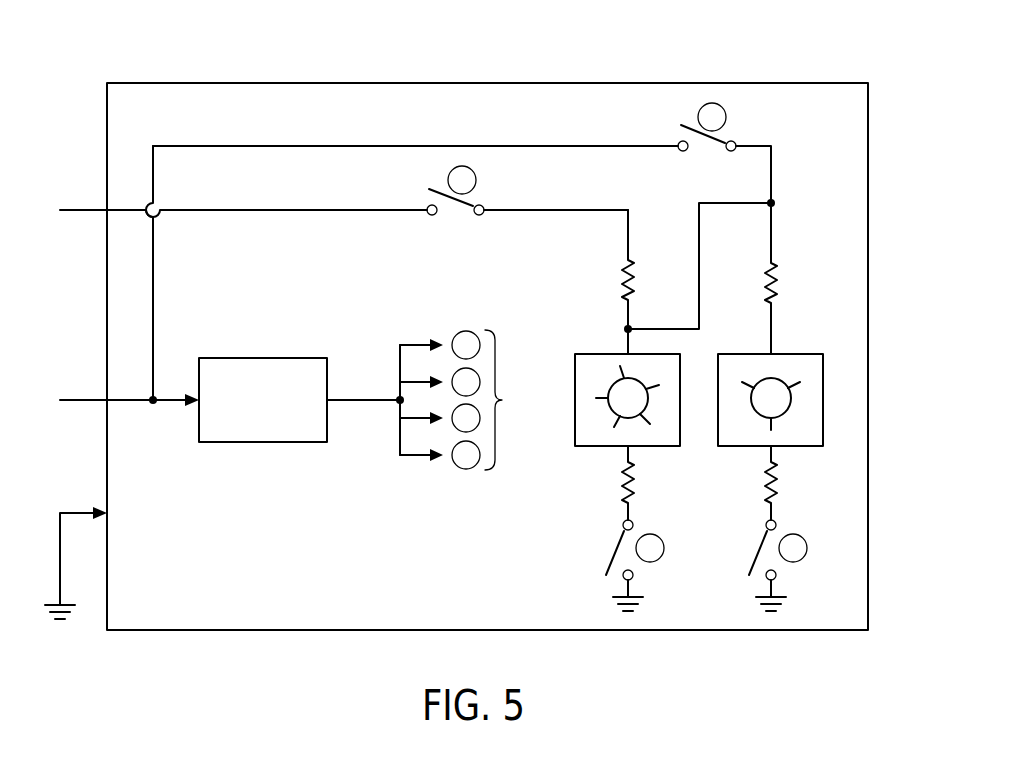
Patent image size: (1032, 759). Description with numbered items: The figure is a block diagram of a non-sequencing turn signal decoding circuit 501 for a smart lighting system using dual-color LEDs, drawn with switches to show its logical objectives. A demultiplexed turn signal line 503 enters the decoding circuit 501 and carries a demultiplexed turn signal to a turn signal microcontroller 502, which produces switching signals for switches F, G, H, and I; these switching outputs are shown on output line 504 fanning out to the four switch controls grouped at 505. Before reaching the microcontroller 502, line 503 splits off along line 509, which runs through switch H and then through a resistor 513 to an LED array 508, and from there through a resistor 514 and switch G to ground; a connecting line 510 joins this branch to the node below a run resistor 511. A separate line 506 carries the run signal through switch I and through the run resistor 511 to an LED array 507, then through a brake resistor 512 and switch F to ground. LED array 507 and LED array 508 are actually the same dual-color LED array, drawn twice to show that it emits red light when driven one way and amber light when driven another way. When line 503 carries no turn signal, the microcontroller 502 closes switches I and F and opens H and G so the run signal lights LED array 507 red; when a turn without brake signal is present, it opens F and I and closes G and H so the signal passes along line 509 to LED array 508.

The turn signal decoding circuit 501 is at (819, 59).
The turn signal microcontroller 502 is at (263, 400).
The demultiplexed turn signal line 503 is at (137, 403).
The controller output line 504 is at (360, 403).
The switch control outputs 505 is at (479, 400).
The line 506 is at (266, 208).
The LED array 507 is at (655, 447).
The LED array 508 is at (728, 447).
The line 509 is at (415, 144).
The connecting line 510 is at (728, 206).
The run resistor 511 is at (620, 288).
The brake resistor 512 is at (620, 488).
The resistor 513 is at (778, 279).
The resistor 514 is at (778, 483).